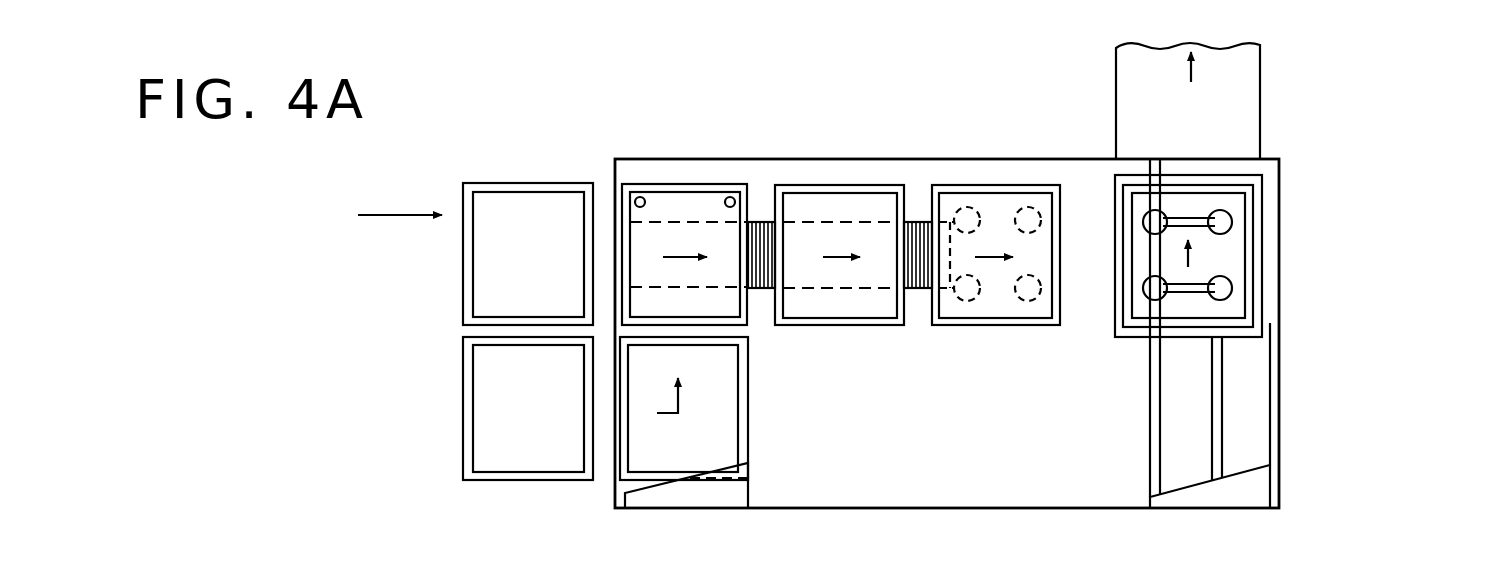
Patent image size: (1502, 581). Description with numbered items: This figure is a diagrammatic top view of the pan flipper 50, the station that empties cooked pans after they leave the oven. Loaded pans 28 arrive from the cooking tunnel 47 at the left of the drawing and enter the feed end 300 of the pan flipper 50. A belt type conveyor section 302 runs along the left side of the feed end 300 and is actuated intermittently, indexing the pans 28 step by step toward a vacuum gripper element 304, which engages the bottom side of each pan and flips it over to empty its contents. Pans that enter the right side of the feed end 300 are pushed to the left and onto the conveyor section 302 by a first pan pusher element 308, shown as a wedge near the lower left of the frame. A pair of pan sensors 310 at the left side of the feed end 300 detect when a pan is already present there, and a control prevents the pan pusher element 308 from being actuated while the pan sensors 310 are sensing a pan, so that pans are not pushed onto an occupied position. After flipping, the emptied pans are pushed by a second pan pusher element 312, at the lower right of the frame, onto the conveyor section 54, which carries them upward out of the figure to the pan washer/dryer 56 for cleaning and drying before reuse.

The loaded pans 28 is at (490, 278).
The cooking tunnel 47 is at (479, 148).
The pan flipper 50 is at (1036, 78).
The conveyor section 54 is at (1195, 128).
The pan washer/dryer 56 is at (1344, 93).
The feed end 300 is at (655, 140).
The belt type conveyor section 302 is at (915, 222).
The vacuum gripper element 304 is at (1228, 230).
The first pan pusher element 308 is at (702, 495).
The pan sensors 310 is at (650, 201).
The second pan pusher element 312 is at (1236, 500).